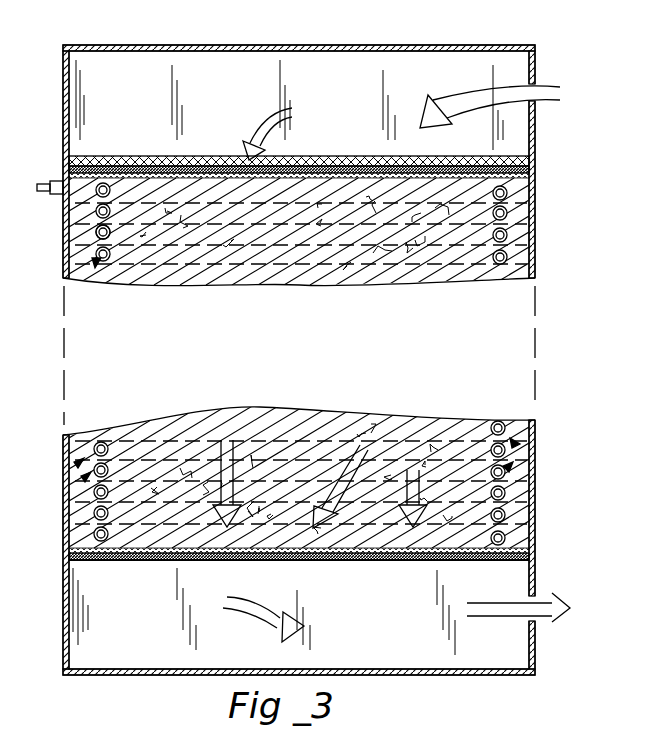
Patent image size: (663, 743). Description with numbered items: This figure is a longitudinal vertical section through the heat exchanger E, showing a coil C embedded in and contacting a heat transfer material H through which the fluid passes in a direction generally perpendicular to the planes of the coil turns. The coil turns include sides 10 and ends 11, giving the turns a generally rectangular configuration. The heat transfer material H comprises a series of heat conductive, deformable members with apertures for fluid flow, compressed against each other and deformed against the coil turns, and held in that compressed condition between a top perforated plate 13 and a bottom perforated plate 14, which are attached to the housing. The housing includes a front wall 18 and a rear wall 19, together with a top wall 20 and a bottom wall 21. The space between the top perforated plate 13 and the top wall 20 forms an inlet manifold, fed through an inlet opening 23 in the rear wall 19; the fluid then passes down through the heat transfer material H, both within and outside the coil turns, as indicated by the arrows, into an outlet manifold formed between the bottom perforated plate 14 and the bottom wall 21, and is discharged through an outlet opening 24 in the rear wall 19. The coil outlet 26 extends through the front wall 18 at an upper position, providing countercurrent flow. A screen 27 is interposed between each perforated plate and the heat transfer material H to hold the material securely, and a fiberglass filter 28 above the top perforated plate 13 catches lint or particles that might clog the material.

The sides 10 is at (422, 185).
The ends 11 is at (96, 212).
The top perforated plate 13 is at (168, 165).
The bottom perforated plate 14 is at (128, 560).
The front wall 18 is at (96, 242).
The rear wall 19 is at (537, 204).
The top wall 20 is at (195, 46).
The bottom wall 21 is at (123, 668).
The inlet opening 23 is at (537, 72).
The outlet opening 24 is at (530, 660).
The outlet 26 is at (52, 180).
The screen 27 is at (322, 170).
The filter 28 is at (143, 160).
The heat exchanger E is at (339, 40).
The heat transfer material H is at (513, 440).
The coil C is at (95, 262).